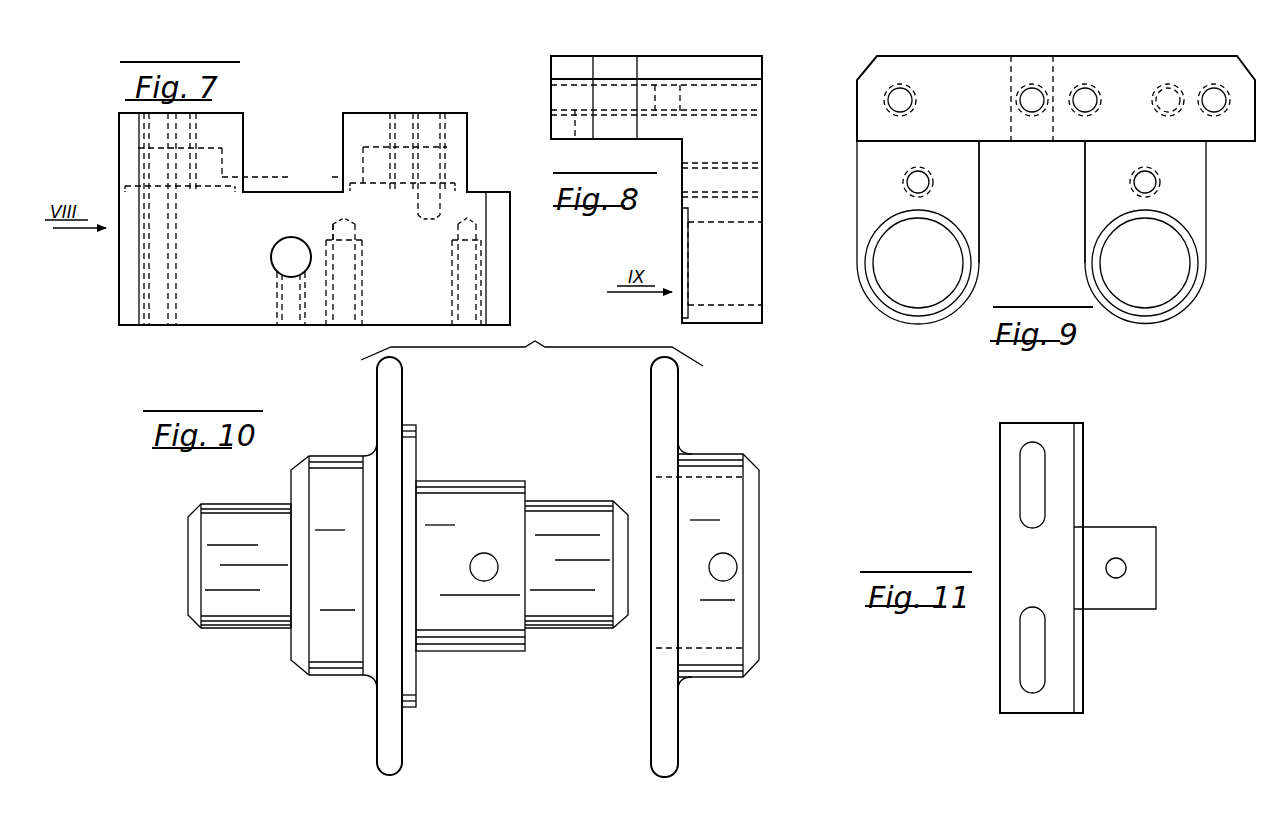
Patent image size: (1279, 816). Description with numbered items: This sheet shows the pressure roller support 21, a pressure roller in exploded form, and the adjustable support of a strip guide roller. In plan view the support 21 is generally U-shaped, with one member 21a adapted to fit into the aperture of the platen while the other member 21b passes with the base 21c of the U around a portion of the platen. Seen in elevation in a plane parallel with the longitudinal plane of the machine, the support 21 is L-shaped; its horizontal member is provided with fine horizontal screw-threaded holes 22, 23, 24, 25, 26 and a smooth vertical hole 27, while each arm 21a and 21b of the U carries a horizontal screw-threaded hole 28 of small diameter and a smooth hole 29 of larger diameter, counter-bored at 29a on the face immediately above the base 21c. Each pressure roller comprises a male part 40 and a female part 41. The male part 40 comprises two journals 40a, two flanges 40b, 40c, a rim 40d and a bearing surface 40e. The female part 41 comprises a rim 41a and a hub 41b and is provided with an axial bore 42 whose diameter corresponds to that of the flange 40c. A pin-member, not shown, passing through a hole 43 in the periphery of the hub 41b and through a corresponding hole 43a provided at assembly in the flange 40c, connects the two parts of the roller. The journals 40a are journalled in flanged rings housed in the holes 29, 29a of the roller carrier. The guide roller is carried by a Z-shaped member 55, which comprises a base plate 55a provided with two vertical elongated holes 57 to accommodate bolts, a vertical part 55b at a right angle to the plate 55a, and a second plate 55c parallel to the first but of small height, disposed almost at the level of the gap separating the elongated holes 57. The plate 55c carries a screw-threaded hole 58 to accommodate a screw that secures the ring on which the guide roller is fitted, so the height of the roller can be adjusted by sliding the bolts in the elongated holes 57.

In FIG. 7, the pressure roller support 21 is at (104, 119).
In FIG. 8, the pressure roller support 21 is at (776, 113).
In FIG. 9, the pressure roller support 21 is at (1030, 184).
In FIG. 7, the member of the support 21a is at (357, 128).
In FIG. 8, the member of the support 21a is at (746, 157).
In FIG. 9, the member of the support 21a is at (1186, 188).
In FIG. 7, the member of the support 21b is at (228, 167).
In FIG. 9, the member of the support 21b is at (877, 213).
In FIG. 7, the base of the U 21c is at (220, 307).
In FIG. 9, the base of the U 21c is at (995, 98).
In FIG. 7, the screw-threaded hole 22 is at (143, 257).
In FIG. 8, the screw-threaded hole 22 is at (727, 112).
In FIG. 9, the screw-threaded hole 22 is at (893, 95).
In FIG. 7, the screw-threaded hole 23 is at (280, 272).
In FIG. 9, the screw-threaded hole 23 is at (1030, 97).
In FIG. 7, the screw-threaded hole 24 is at (362, 262).
In FIG. 9, the screw-threaded hole 24 is at (1086, 97).
In FIG. 7, the screw-threaded hole 25 is at (350, 233).
In FIG. 8, the screw-threaded hole 25 is at (580, 115).
In FIG. 9, the screw-threaded hole 25 is at (1167, 89).
In FIG. 7, the screw-threaded hole 26 is at (483, 297).
In FIG. 9, the screw-threaded hole 26 is at (1216, 100).
In FIG. 7, the smooth vertical hole 27 is at (285, 243).
In FIG. 8, the smooth vertical hole 27 is at (551, 68).
In FIG. 9, the smooth vertical hole 27 is at (1032, 202).
In FIG. 7, the horizontal screw-threaded hole 28 is at (195, 136).
In FIG. 9, the horizontal screw-threaded hole 28 is at (910, 180).
In FIG. 7, the smooth hole 29 is at (282, 177).
In FIG. 8, the smooth hole 29 is at (742, 305).
In FIG. 9, the smooth hole 29 is at (930, 295).
In FIG. 7, the counter-bore 29a is at (128, 183).
In FIG. 8, the counter-bore 29a is at (682, 220).
In FIG. 9, the counter-bore 29a is at (872, 290).
In FIG. 10, the male part 40 is at (348, 419).
In FIG. 10, the journals 40a is at (248, 613).
In FIG. 10, the flange 40b is at (334, 660).
In FIG. 10, the flange 40c is at (503, 628).
In FIG. 10, the rim 40d is at (386, 745).
In FIG. 10, the bearing surface 40e is at (413, 425).
In FIG. 10, the female part 41 is at (720, 410).
In FIG. 10, the rim 41a is at (668, 392).
In FIG. 10, the hub 41b is at (700, 633).
In FIG. 10, the axial bore 42 is at (732, 477).
In FIG. 10, the hole 43 is at (725, 565).
In FIG. 10, the hole 43a is at (486, 560).
In FIG. 11, the Z-shaped member 55 is at (981, 493).
In FIG. 11, the base plate 55a is at (1030, 434).
In FIG. 11, the vertical part 55b is at (1079, 513).
In FIG. 11, the second plate 55c is at (1110, 595).
In FIG. 11, the elongated holes 57 is at (1030, 465).
In FIG. 11, the screw-threaded hole 58 is at (1122, 565).